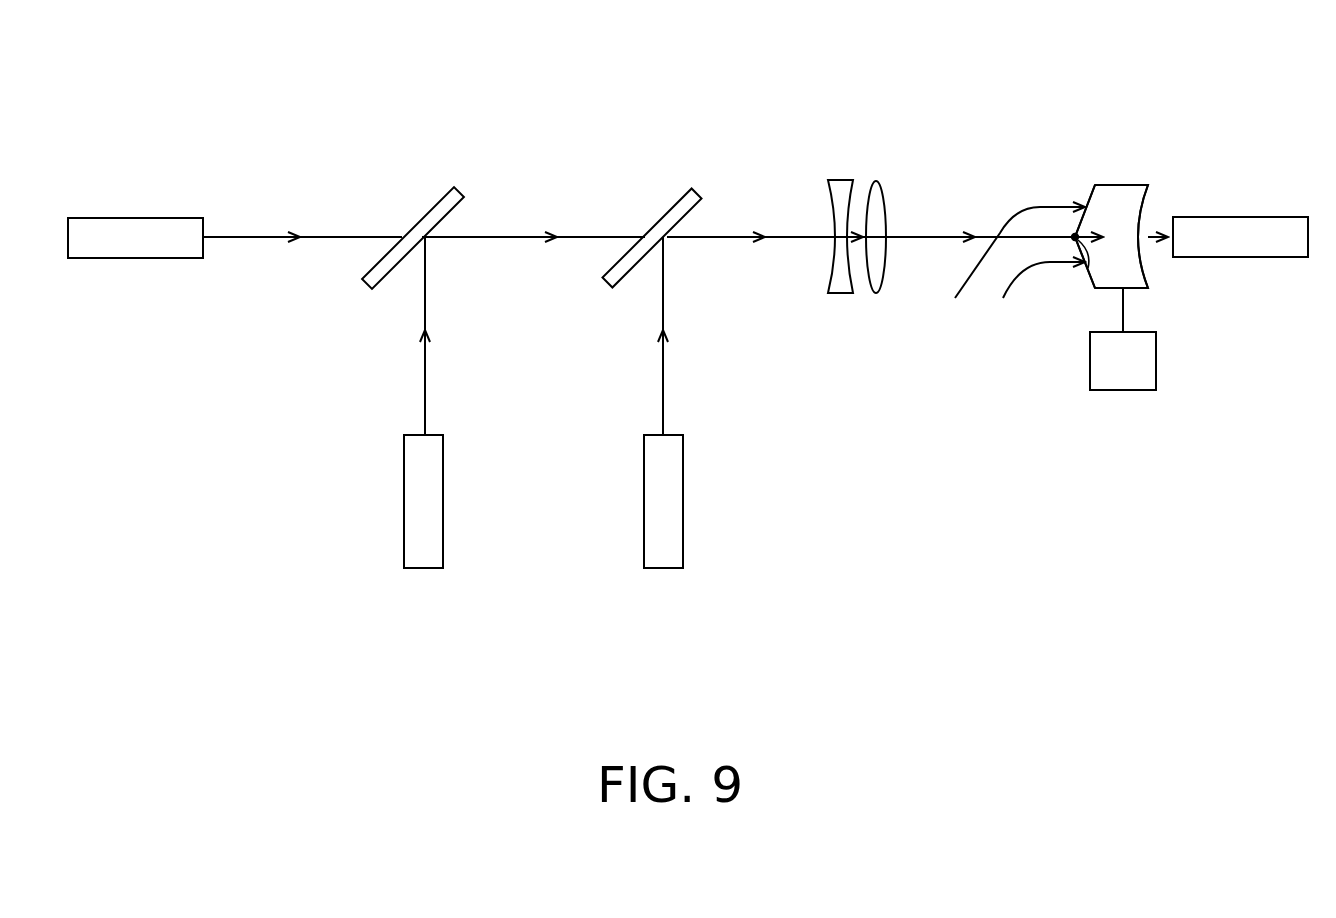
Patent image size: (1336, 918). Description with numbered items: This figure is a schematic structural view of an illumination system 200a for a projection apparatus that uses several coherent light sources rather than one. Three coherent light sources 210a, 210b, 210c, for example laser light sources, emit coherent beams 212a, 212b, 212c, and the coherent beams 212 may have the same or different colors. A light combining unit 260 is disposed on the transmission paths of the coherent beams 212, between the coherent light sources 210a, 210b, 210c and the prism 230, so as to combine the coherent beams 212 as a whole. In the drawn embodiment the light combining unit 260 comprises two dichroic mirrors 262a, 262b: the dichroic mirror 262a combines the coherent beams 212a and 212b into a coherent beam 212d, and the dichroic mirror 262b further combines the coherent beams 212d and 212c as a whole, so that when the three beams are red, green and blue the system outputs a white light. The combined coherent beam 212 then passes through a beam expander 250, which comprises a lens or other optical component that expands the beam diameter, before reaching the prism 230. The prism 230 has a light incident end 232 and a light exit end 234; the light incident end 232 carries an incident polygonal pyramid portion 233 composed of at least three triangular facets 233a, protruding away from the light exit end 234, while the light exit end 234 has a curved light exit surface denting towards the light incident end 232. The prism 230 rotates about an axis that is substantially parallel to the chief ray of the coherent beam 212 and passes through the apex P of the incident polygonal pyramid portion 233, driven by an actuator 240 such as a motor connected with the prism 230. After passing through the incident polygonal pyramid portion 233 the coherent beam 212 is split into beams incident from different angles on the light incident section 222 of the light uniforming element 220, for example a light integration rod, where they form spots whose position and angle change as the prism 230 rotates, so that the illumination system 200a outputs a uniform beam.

The illumination system 200a is at (1196, 665).
The coherent light source 210a is at (137, 243).
The coherent light source 210b is at (425, 573).
The coherent light source 210c is at (663, 573).
The coherent light beam 212a is at (266, 237).
The coherent light beam 212b is at (425, 385).
The coherent light beam 212c is at (663, 385).
The coherent beam 212d is at (572, 237).
The coherent beam 212 is at (803, 237).
The light combining unit 260 is at (622, 56).
The dichroic mirror 262a is at (432, 217).
The dichroic mirror 262b is at (675, 217).
The beam expander 250 is at (886, 300).
The prism 230 is at (1125, 197).
The light incident end 232 is at (1085, 203).
The light exit end 234 is at (1143, 193).
The incident polygonal pyramid portion 233 is at (1022, 333).
The triangular facet 233a is at (1001, 271).
The apex P is at (1086, 268).
The light incident section 222 is at (1170, 252).
The light uniforming element 220 is at (1275, 247).
The actuator 240 is at (1126, 372).